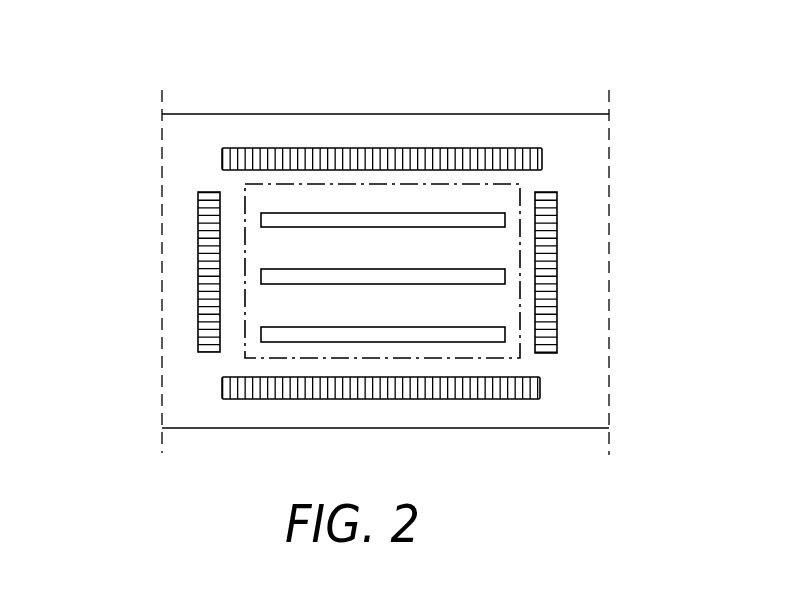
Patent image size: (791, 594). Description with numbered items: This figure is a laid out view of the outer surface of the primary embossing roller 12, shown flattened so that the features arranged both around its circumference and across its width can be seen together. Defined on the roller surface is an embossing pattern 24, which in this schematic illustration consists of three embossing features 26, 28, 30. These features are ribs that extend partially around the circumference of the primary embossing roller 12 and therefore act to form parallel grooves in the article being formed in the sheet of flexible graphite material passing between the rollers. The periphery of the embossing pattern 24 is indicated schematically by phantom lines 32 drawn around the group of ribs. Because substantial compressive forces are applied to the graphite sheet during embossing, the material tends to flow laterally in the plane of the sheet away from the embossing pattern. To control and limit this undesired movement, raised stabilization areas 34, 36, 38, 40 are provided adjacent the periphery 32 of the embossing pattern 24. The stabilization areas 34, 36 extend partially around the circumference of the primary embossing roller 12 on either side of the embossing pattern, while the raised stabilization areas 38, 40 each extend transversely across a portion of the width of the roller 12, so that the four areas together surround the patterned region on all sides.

The primary embossing roller 12 is at (532, 113).
The embossing pattern 24 is at (274, 325).
The embossing feature 26 is at (305, 337).
The embossing feature 28 is at (278, 279).
The embossing feature 30 is at (283, 212).
The phantom lines 32 is at (365, 183).
The raised stabilization area 34 is at (302, 157).
The raised stabilization area 36 is at (428, 390).
The raised stabilization area 38 is at (550, 302).
The raised stabilization area 40 is at (202, 340).